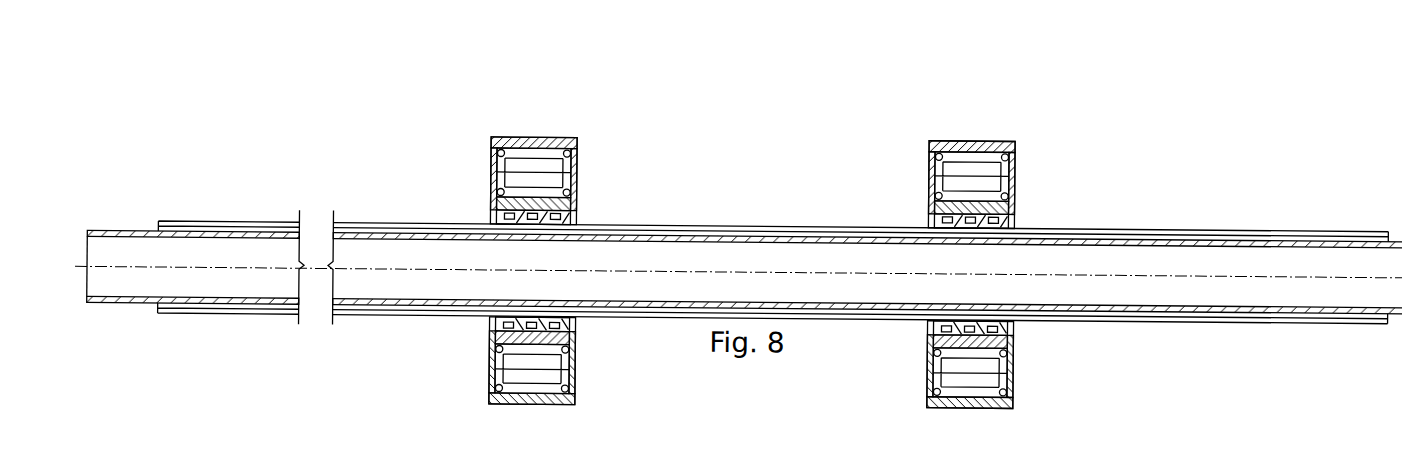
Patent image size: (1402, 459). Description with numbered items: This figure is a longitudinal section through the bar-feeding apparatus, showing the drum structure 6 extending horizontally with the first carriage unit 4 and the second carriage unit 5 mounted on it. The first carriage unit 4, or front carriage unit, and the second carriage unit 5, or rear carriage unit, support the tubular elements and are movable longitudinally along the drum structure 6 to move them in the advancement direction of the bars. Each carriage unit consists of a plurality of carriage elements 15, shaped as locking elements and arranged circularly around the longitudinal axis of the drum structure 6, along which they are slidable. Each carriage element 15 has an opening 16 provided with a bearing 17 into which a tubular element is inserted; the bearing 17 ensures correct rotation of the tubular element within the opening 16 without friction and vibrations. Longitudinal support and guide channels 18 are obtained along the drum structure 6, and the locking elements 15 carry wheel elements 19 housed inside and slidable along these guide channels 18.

The first carriage unit 4 is at (985, 143).
The second carriage unit 5 is at (548, 145).
The drum structure 6 is at (708, 236).
The carriage element 15 is at (518, 143).
The opening 16 is at (592, 164).
The bearing 17 is at (495, 187).
The longitudinal support and guide channel 18 is at (410, 311).
The wheel element 19 is at (957, 233).